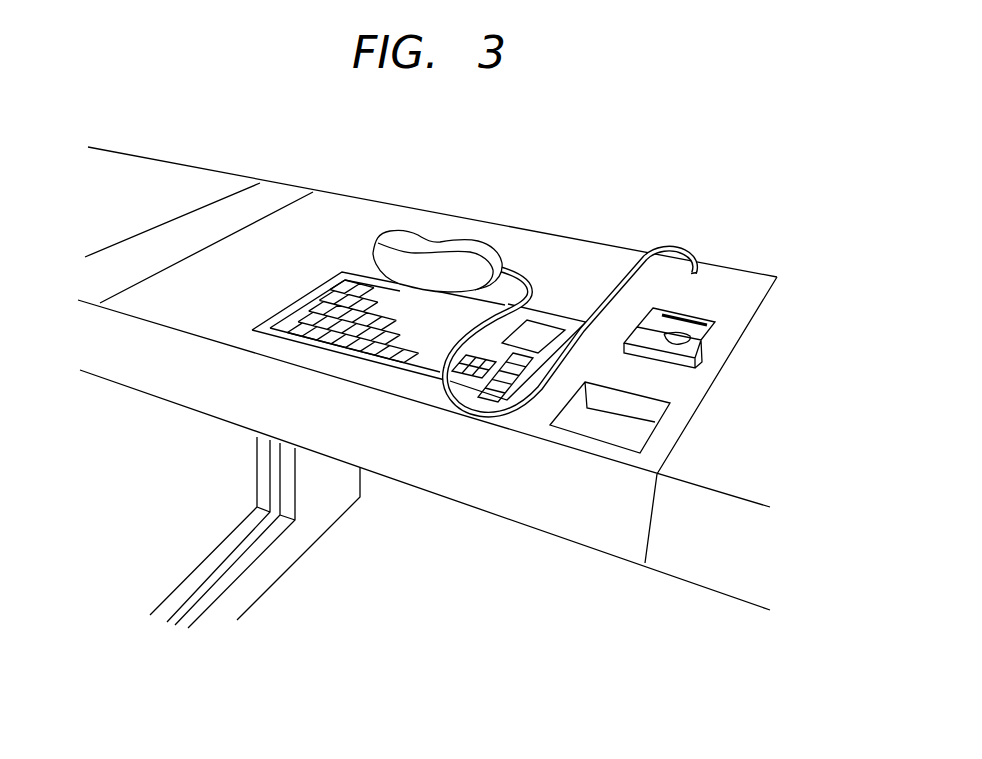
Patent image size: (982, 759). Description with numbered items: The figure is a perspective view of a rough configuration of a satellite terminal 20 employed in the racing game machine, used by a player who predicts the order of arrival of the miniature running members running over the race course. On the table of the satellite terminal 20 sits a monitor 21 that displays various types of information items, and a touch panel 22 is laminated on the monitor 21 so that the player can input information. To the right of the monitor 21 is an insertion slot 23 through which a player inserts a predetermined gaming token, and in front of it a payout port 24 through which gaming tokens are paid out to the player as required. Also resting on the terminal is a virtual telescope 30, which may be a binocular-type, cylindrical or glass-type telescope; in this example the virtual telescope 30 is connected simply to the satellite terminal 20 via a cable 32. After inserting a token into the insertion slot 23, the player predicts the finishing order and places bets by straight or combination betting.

The satellite terminal 20 is at (218, 452).
The monitor 21 is at (419, 277).
The touch panel 22 is at (358, 271).
The insertion slot 23 is at (690, 307).
The payout port 24 is at (607, 435).
The virtual telescope 30 is at (448, 236).
The cable 32 is at (676, 248).